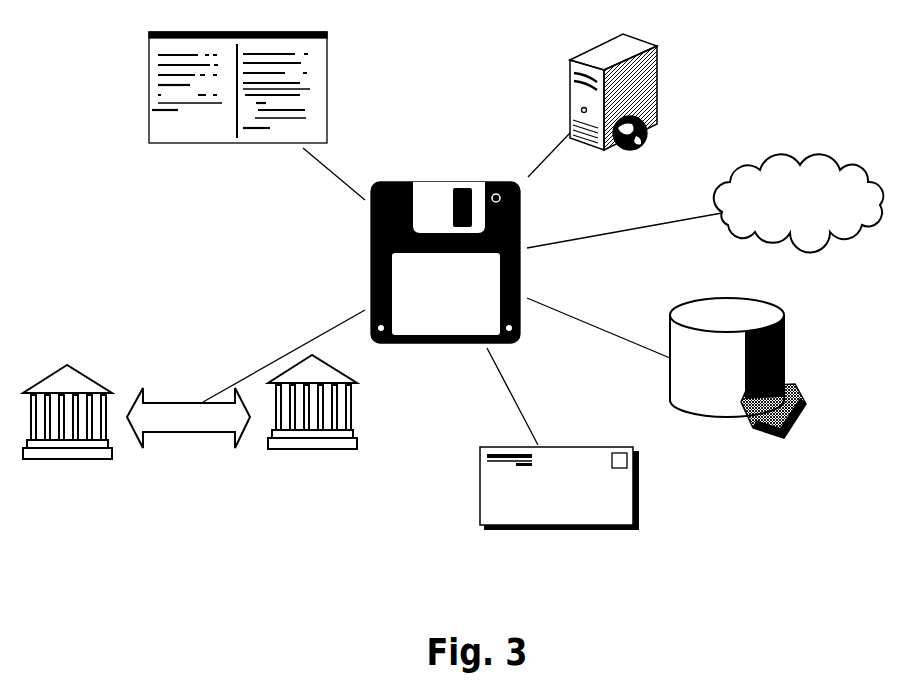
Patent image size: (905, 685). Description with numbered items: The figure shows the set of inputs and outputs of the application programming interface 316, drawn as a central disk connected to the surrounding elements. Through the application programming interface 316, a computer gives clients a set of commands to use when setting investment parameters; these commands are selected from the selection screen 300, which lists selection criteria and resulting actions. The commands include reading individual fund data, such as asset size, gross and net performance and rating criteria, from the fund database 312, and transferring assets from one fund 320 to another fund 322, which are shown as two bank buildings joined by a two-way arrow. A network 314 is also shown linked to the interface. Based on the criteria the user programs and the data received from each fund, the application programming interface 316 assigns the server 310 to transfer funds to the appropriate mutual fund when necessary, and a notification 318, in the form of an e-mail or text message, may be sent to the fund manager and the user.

The selection screen 300 is at (257, 116).
The server 310 is at (592, 110).
The fund database 312 is at (666, 379).
The network 314 is at (705, 203).
The application programming interface 316 is at (445, 284).
The notification 318 is at (559, 458).
The fund 320 is at (194, 398).
The fund 322 is at (312, 416).